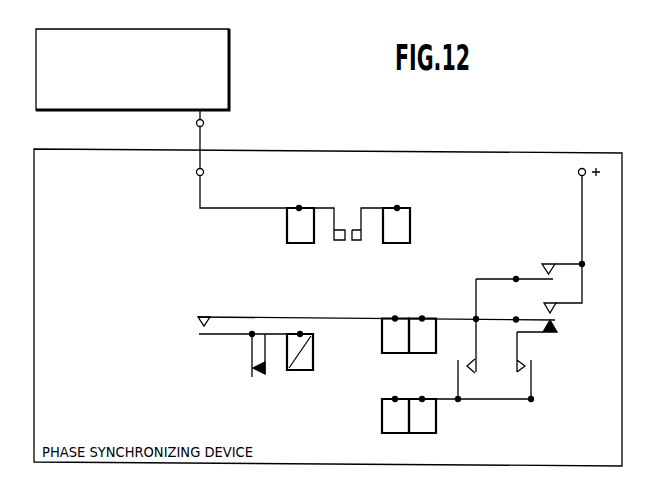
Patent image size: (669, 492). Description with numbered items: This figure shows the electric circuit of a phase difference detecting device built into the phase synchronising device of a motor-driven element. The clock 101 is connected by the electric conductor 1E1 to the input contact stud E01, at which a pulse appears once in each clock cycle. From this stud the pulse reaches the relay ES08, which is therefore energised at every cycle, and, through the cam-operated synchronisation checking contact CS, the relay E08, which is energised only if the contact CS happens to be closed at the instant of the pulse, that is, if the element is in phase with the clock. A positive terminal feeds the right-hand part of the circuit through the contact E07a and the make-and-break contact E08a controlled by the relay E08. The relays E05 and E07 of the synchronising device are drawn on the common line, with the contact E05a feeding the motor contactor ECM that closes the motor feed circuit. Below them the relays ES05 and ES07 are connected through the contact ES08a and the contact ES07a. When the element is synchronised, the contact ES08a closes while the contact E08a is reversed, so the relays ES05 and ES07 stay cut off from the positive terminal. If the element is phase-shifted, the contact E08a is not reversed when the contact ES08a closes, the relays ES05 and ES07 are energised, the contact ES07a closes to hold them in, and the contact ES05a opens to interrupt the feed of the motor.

The clock 101 is at (230, 70).
The electric conductor 1E1 is at (201, 131).
The input contact stud E01 is at (203, 175).
The relay ES08 is at (306, 243).
The synchronisation checking contact CS is at (348, 215).
The relay E08 is at (410, 226).
The contact E07a is at (540, 272).
The make-and-break contact E08a is at (552, 315).
The contact ES08a is at (532, 356).
The contact ES07a is at (459, 355).
The relay E05 is at (392, 324).
The relay E07 is at (422, 335).
The relay ES05 is at (392, 418).
The relay ES07 is at (421, 421).
The contact E05a is at (198, 330).
The contact ES05a is at (258, 377).
The motor contactor ECM is at (302, 365).